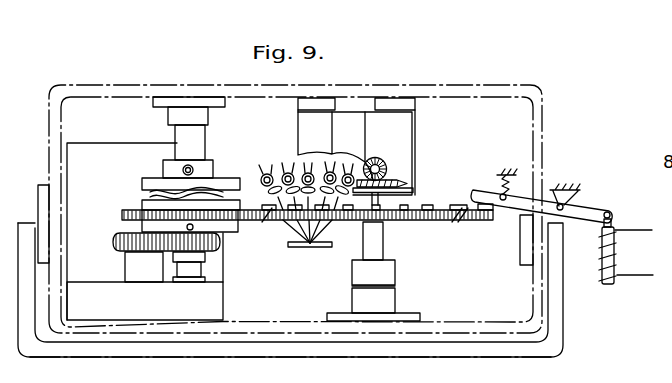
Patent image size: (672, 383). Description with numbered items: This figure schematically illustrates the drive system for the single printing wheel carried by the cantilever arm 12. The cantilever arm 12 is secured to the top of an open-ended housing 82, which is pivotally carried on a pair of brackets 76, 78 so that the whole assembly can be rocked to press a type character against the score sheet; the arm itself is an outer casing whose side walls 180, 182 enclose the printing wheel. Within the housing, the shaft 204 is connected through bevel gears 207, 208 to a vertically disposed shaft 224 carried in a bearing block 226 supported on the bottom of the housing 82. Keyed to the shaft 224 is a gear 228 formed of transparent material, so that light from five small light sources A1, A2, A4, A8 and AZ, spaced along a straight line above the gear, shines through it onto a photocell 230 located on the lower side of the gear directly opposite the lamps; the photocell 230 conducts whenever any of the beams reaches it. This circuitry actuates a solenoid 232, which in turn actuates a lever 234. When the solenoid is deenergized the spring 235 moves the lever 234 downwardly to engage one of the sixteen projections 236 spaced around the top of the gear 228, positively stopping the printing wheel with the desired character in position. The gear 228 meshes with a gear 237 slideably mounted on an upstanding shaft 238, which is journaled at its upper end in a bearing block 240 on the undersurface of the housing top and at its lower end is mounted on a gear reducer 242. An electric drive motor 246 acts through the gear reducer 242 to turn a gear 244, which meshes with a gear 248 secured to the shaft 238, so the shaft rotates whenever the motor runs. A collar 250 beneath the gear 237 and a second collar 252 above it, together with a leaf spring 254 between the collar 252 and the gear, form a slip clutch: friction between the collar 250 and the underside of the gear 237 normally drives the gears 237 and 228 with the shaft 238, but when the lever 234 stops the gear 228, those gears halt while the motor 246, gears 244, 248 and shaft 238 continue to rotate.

The cantilever arm 12 is at (352, 108).
The bracket 76 is at (565, 325).
The bracket 78 is at (43, 357).
The open-ended housing 82 is at (474, 88).
The side wall 180 is at (305, 128).
The side wall 182 is at (412, 135).
The shaft 204 is at (395, 178).
The bevel gear 207 is at (387, 160).
The bevel gear 208 is at (413, 188).
The vertically disposed shaft 224 is at (363, 246).
The bearing block 226 is at (388, 298).
The gear 228 is at (475, 218).
The photocell 230 is at (312, 248).
The solenoid 232 is at (614, 253).
The lever 234 is at (528, 193).
The spring 235 is at (497, 184).
The projections 236 is at (273, 222).
The gear 237 is at (130, 206).
The upstanding shaft 238 is at (183, 138).
The bearing block 240 is at (208, 117).
The gear reducer 242 is at (223, 304).
The gear 244 is at (123, 252).
The electric drive motor 246 is at (103, 123).
The gear 248 is at (224, 250).
The collar 250 is at (147, 229).
The second collar 252 is at (168, 170).
The leaf spring 254 is at (143, 195).
The light source A1 is at (262, 179).
The light source A2 is at (290, 189).
The light source A4 is at (312, 172).
The light source A8 is at (335, 172).
The light source AZ is at (352, 175).